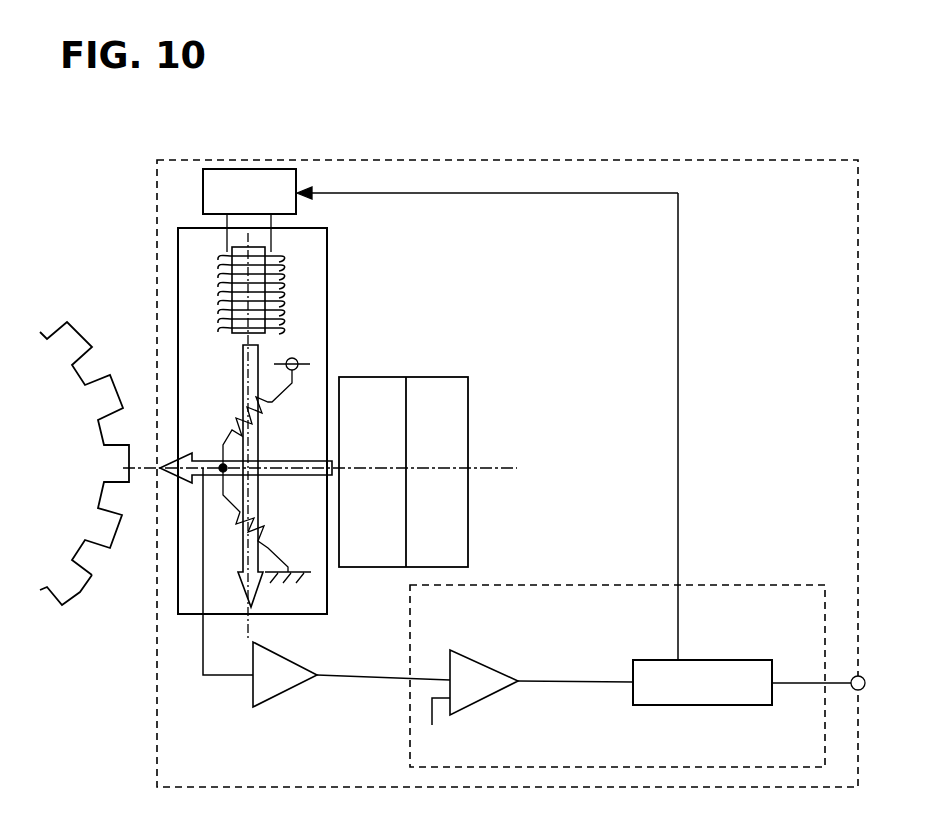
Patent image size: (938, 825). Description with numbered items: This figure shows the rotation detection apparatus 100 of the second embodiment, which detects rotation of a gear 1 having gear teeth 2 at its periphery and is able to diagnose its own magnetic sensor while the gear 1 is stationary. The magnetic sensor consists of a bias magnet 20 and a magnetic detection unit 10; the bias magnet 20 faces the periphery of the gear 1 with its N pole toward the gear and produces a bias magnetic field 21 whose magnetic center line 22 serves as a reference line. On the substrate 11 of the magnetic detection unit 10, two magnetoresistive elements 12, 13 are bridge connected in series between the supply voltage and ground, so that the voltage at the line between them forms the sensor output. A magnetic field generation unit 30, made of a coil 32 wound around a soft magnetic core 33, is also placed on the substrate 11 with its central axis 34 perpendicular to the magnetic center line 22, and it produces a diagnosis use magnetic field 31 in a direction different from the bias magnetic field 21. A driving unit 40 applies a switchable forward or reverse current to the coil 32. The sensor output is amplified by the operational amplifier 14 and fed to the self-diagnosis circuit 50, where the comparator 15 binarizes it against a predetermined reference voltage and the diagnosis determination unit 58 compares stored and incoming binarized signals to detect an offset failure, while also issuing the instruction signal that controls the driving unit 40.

The gear 1 is at (84, 518).
The gear teeth 2 is at (50, 612).
The magnetic detection unit 10 is at (255, 471).
The substrate 11 is at (327, 247).
The magnetoresistive element 12 is at (236, 415).
The magnetoresistive element 13 is at (258, 529).
The operational amplifier 14 is at (292, 662).
The comparator 15 is at (478, 662).
The bias magnet 20 is at (468, 377).
The bias magnetic field 21 is at (166, 480).
The magnetic center line 22 is at (520, 466).
The magnetic field generation unit 30 is at (314, 290).
The diagnosis use magnetic field 31 is at (262, 592).
The coil 32 is at (283, 269).
The core 33 is at (281, 332).
The central axis 34 is at (248, 639).
The driving unit 40 is at (296, 178).
The self-diagnosis circuit 50 is at (715, 585).
The diagnosis determination unit 58 is at (748, 660).
The rotation detection apparatus 100 is at (738, 160).